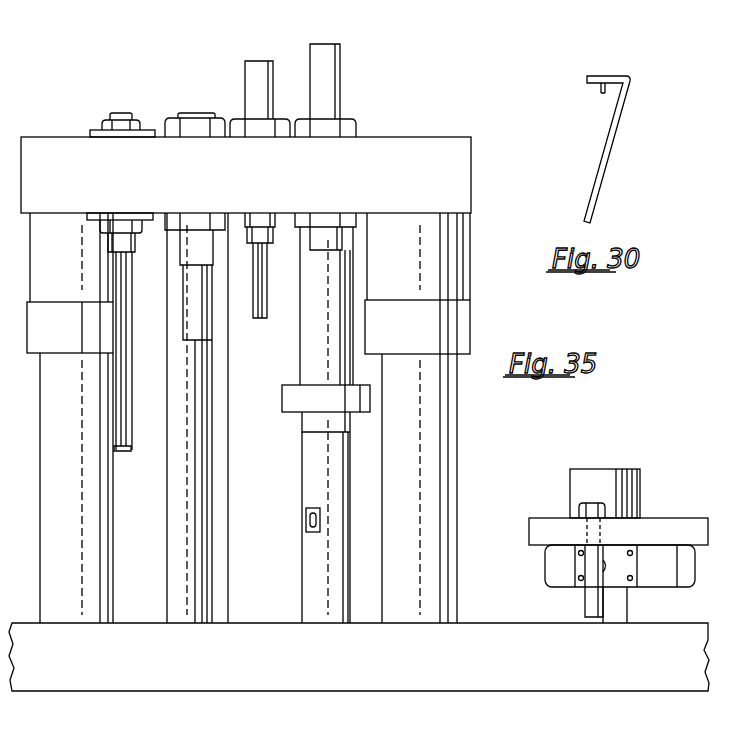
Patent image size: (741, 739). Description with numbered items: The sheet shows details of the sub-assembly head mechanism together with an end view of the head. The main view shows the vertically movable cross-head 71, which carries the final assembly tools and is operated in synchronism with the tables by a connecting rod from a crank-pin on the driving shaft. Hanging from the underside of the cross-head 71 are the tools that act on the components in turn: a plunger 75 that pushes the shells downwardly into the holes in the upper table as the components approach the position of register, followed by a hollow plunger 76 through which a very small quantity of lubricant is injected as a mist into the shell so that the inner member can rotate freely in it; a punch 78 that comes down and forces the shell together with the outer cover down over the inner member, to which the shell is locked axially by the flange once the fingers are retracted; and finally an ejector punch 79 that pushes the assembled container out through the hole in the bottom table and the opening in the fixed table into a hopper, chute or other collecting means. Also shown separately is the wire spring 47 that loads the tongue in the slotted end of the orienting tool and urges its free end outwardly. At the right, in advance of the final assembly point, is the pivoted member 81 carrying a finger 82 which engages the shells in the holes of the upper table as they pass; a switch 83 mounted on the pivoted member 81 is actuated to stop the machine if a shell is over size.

In FIG. 30, the wire spring 47 is at (612, 167).
In FIG. 35, the vertically movable cross-head 71 is at (451, 164).
In FIG. 35, the plunger 75 is at (330, 238).
In FIG. 35, the hollow plunger 76 is at (256, 302).
In FIG. 35, the punch 78 is at (190, 302).
In FIG. 35, the ejector punch 79 is at (126, 406).
In FIG. 35, the pivoted member 81 is at (680, 528).
In FIG. 35, the finger 82 is at (590, 601).
In FIG. 35, the switch 83 is at (598, 486).